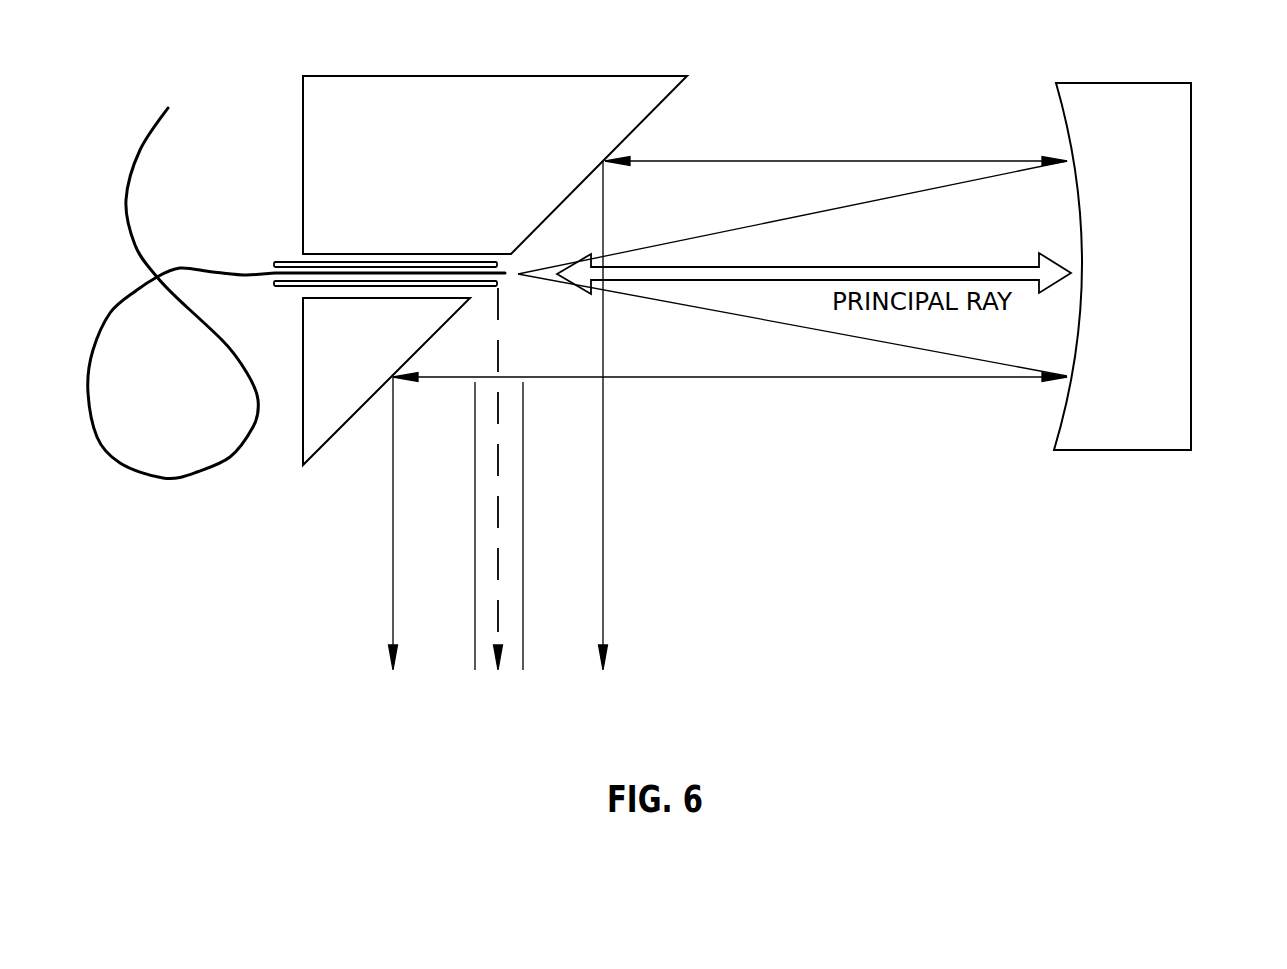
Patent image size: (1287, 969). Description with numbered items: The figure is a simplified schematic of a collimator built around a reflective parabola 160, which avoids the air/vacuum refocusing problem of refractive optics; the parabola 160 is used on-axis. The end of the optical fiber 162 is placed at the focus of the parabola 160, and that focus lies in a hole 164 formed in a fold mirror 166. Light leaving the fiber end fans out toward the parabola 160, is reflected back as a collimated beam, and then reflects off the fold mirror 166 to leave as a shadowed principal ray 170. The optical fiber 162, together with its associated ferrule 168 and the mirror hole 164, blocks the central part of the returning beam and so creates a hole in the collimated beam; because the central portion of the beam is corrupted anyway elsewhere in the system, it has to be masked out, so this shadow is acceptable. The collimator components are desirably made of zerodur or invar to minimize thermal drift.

The reflective parabola 160 is at (1192, 96).
The optical fiber 162 is at (140, 150).
The hole 164 is at (286, 250).
The fold mirror 166 is at (594, 75).
The ferrule 168 is at (287, 296).
The shadowed principal ray 170 is at (498, 558).